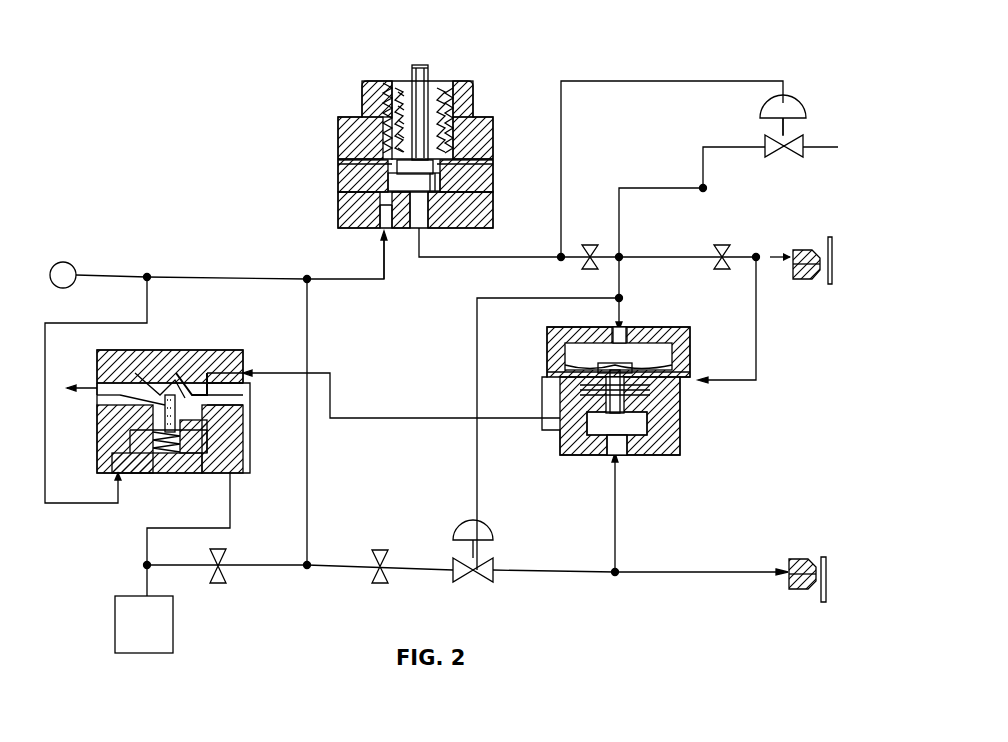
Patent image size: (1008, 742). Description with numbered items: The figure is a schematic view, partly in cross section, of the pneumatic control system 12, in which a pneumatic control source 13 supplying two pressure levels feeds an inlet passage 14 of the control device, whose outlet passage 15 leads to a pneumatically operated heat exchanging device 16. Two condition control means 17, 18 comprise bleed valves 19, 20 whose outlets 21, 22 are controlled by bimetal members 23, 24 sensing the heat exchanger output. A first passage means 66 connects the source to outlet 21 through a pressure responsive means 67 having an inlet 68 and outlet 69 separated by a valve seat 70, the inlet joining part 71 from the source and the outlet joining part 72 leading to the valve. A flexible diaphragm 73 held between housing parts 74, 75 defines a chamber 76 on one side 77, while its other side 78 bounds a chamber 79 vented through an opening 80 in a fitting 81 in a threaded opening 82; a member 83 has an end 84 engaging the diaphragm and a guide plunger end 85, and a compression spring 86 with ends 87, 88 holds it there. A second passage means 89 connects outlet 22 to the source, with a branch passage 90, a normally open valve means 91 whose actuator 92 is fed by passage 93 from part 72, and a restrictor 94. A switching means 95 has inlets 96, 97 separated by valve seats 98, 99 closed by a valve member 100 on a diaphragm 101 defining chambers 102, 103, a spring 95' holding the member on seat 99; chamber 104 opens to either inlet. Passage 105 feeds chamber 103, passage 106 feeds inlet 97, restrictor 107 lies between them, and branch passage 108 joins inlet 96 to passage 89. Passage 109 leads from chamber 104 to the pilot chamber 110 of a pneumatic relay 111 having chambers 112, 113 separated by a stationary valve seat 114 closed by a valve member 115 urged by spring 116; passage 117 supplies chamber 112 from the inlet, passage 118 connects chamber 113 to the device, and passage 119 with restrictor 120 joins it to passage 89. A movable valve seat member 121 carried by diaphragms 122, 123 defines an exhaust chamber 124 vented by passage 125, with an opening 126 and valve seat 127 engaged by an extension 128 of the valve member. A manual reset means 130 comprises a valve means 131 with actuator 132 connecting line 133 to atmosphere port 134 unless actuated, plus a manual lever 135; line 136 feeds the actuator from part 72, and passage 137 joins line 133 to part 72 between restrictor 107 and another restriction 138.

The pneumatic control system 12 is at (700, 32).
The pneumatic control source 13 is at (62, 266).
The inlet passage means 14 is at (110, 273).
The outlet passage 15 is at (140, 540).
The pneumatically operated device 16 is at (160, 627).
The condition control means 17 is at (826, 288).
The condition control means 18 is at (810, 606).
The bleed type pneumatic valve 19 is at (807, 280).
The bleed type pneumatic valve 20 is at (792, 558).
The outlet 21 is at (805, 247).
The outlet 22 is at (820, 556).
The bimetal member 23 is at (830, 247).
The bimetal member 24 is at (826, 584).
The first passage means 66 is at (228, 275).
The pressure responsive means 67 is at (413, 139).
The inlet 68 is at (380, 226).
The outlet 69 is at (428, 226).
The valve seat 70 is at (399, 257).
The part of first passage means 71 is at (348, 281).
The part of first passage means 72 is at (468, 258).
The flexible diaphragm 73 is at (442, 182).
The housing part 74 is at (340, 140).
The housing part 75 is at (340, 205).
The chamber 76 is at (466, 228).
The side of diaphragm 77 is at (446, 198).
The other side of diaphragm 78 is at (370, 192).
The chamber 79 is at (394, 132).
The opening 80 is at (398, 76).
The fitting 81 is at (380, 86).
The threaded opening 82 is at (443, 90).
The member 83 is at (396, 170).
The enlarged end 84 is at (450, 173).
The guide plunger end 85 is at (412, 57).
The compression spring 86 is at (390, 114).
The spring end 87 is at (394, 108).
The spring end 88 is at (440, 164).
The second passage means 89 is at (546, 574).
The branch passage means 90 is at (312, 506).
The normally open pressure responsive valve means 91 is at (498, 552).
The pneumatic actuator 92 is at (460, 526).
The passage means 93 is at (472, 468).
The restrictor 94 is at (376, 546).
The pneumatically operated switching means 95 is at (618, 394).
The spring 95' is at (646, 396).
The inlet 96 is at (630, 456).
The inlet 97 is at (680, 368).
The valve seat 98 is at (596, 444).
The valve seat 99 is at (660, 403).
The movable valve member 100 is at (610, 397).
The flexible diaphragm 101 is at (660, 333).
The chamber 102 is at (576, 378).
The chamber 103 is at (580, 352).
The chamber 104 is at (660, 428).
The passage 105 is at (626, 318).
The passage means 106 is at (764, 332).
The restrictor 107 is at (719, 244).
The branch passage means 108 is at (618, 517).
The passage means 109 is at (380, 416).
The pilot pressure chamber 110 is at (180, 356).
The pneumatic relay portion 111 is at (176, 398).
The main pressure chamber 112 is at (184, 450).
The branch pressure chamber 113 is at (150, 410).
The stationary valve seat 114 is at (195, 456).
The valve member 115 is at (152, 454).
The compression spring 116 is at (162, 456).
The passage means 117 is at (98, 460).
The passage means 118 is at (240, 460).
The passage means 119 is at (256, 566).
The restrictor 120 is at (224, 584).
The movable valve seat member 121 is at (192, 368).
The flexible diaphragm 122 is at (127, 352).
The flexible diaphragm 123 is at (244, 400).
The exhaust chamber 124 is at (244, 384).
The passage means 125 is at (100, 366).
The opening 126 is at (174, 356).
The valve seat 127 is at (98, 398).
The extension 128 is at (122, 432).
The manual reset means 130 is at (768, 106).
The pneumatically operated valve means 131 is at (800, 134).
The pneumatic actuator 132 is at (792, 102).
The line 133 is at (726, 142).
The port 134 is at (819, 148).
The manual lever 135 is at (788, 120).
The line 136 is at (672, 80).
The passage 137 is at (670, 182).
The restriction 138 is at (603, 234).